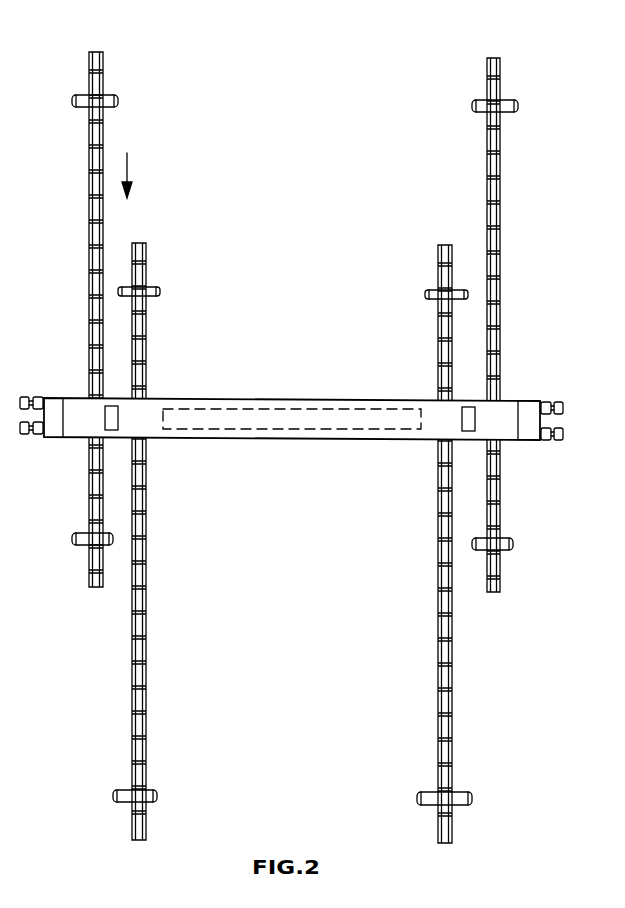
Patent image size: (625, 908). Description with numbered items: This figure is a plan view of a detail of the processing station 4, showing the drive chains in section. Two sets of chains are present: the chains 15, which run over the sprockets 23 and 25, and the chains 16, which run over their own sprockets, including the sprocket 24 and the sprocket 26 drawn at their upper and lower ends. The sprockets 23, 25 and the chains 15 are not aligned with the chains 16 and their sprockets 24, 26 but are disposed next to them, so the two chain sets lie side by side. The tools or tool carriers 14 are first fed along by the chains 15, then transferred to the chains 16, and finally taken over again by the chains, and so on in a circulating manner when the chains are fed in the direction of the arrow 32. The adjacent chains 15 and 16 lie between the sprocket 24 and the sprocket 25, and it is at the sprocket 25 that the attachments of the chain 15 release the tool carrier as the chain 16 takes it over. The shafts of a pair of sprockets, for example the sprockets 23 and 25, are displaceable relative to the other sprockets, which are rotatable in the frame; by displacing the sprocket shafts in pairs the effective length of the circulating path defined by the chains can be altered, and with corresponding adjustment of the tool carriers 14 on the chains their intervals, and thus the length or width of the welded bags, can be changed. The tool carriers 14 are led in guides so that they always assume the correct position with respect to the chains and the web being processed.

The processing station 4 is at (301, 437).
The tool carrier 14 is at (312, 408).
The chain 15 is at (90, 168).
The chain 16 is at (134, 674).
The sprocket 23 is at (100, 70).
The sprocket 24 is at (146, 262).
The sprocket 25 is at (92, 508).
The lower cross bar of post 16 26 is at (140, 766).
The arrow 32 is at (130, 168).